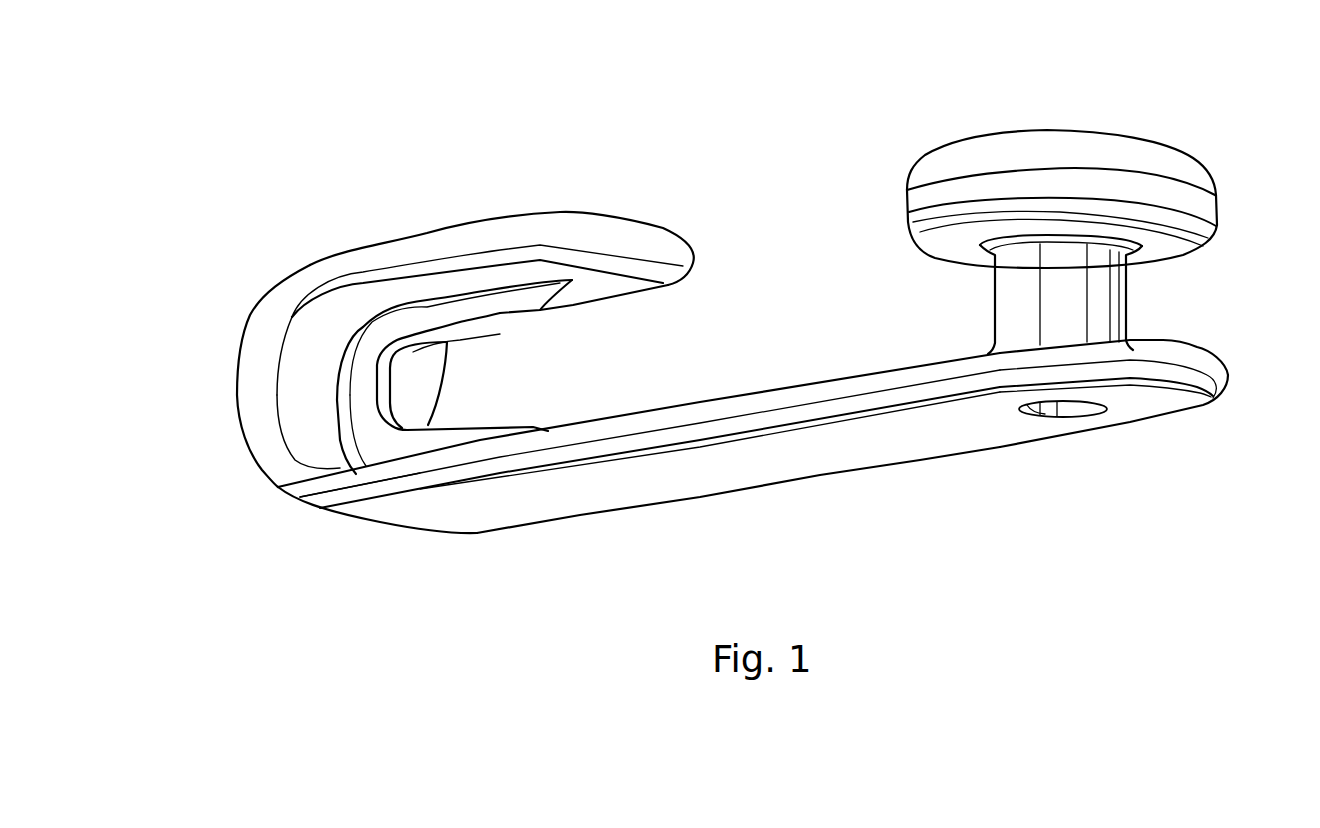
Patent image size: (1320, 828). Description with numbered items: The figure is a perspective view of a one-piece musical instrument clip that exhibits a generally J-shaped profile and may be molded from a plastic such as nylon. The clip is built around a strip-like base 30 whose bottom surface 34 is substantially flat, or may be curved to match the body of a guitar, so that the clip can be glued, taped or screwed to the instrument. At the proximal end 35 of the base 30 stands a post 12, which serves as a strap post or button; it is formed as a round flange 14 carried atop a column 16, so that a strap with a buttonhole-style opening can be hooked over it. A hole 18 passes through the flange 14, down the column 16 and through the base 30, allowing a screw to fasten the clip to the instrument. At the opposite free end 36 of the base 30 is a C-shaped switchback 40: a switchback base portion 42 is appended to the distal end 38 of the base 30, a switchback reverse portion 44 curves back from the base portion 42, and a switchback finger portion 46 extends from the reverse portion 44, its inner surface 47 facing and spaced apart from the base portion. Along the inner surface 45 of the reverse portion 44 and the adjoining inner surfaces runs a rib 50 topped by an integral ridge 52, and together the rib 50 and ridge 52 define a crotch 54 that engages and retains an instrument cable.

The post 12 is at (1238, 132).
The round flange 14 is at (914, 164).
The column 16 is at (1128, 309).
The hole 18 is at (1073, 408).
The base 30 is at (764, 500).
The bottom surface 34 is at (890, 450).
The proximal end 35 is at (1253, 343).
The free end 36 is at (280, 539).
The distal end 38 is at (600, 545).
The switchback 40 is at (246, 176).
The switchback base portion 42 is at (338, 543).
The switchback reverse portion 44 is at (238, 497).
The inner surface 45 is at (293, 394).
The switchback finger portion 46 is at (336, 237).
The inner surface 47 is at (600, 289).
The rib 50 is at (509, 409).
The ridge 52 is at (484, 333).
The crotch 54 is at (509, 376).